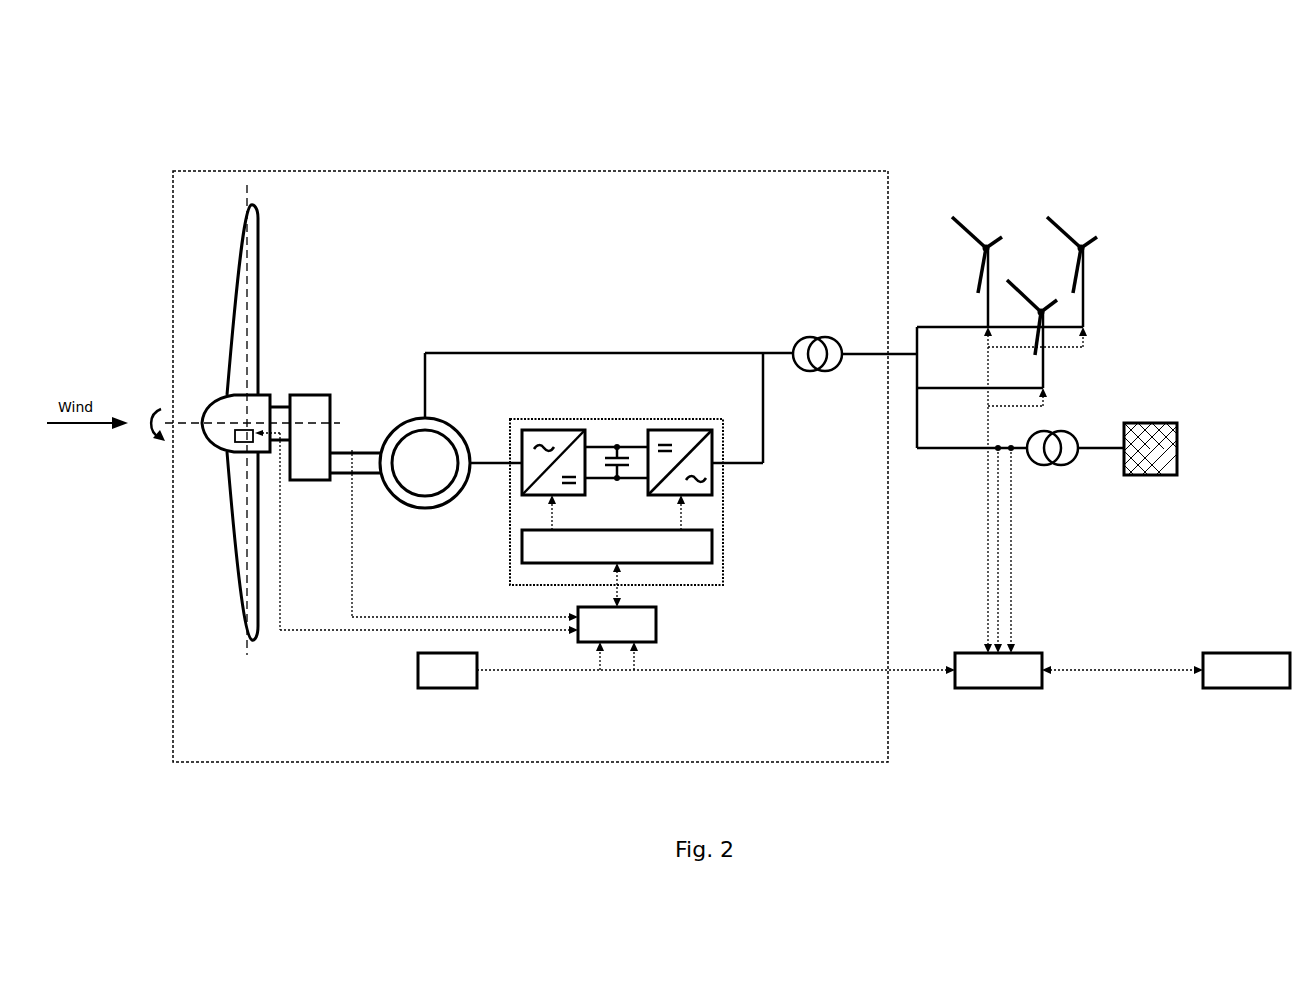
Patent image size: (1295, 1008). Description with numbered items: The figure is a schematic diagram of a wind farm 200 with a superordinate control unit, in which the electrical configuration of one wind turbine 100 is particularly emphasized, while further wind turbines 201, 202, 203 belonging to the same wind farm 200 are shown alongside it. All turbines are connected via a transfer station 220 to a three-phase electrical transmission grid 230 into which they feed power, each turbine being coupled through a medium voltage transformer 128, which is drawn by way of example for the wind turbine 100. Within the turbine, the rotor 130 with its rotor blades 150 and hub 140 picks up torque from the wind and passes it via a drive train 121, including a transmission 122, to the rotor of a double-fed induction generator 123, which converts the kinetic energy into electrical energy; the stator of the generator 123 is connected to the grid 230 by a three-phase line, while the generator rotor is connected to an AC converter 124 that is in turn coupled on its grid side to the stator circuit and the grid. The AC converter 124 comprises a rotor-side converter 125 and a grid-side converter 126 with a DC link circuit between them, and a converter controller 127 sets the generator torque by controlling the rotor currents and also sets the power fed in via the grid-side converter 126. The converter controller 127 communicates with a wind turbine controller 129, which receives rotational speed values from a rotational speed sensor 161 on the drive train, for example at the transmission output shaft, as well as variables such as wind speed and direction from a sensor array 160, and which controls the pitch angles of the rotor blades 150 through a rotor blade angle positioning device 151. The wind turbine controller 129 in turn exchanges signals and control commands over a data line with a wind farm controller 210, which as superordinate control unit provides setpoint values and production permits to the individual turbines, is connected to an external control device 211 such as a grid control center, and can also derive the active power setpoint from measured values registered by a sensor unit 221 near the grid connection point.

The wind turbine 100 is at (514, 170).
The drive train 121 is at (330, 487).
The transmission 122 is at (307, 387).
The double-fed induction generator 123 is at (405, 418).
The AC converter 124 is at (724, 572).
The rotor-side converter 125 is at (550, 438).
The grid-side converter 126 is at (685, 438).
The converter controller 127 is at (522, 550).
The medium voltage transformer 128 is at (812, 335).
The wind turbine controller 129 is at (657, 620).
The rotor 130 is at (228, 288).
The hub 140 is at (206, 410).
The rotor blades 150 is at (237, 523).
The rotor blade angle positioning device 151 is at (232, 445).
The sensor array 160 is at (448, 690).
The rotational speed sensor 161 is at (345, 445).
The wind farm 200 is at (913, 125).
The wind turbine 201 is at (988, 232).
The wind turbine 202 is at (1032, 280).
The wind turbine 203 is at (1081, 232).
The wind farm controller 210 is at (1012, 678).
The external control device 211 is at (1240, 680).
The transfer station 220 is at (1058, 468).
The sensor unit 221 is at (1000, 453).
The electrical transmission grid 230 is at (1155, 480).